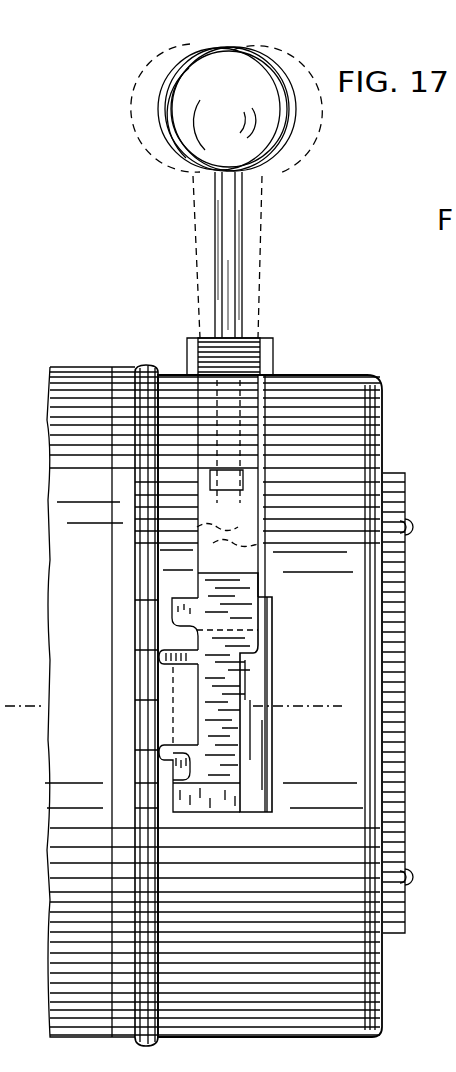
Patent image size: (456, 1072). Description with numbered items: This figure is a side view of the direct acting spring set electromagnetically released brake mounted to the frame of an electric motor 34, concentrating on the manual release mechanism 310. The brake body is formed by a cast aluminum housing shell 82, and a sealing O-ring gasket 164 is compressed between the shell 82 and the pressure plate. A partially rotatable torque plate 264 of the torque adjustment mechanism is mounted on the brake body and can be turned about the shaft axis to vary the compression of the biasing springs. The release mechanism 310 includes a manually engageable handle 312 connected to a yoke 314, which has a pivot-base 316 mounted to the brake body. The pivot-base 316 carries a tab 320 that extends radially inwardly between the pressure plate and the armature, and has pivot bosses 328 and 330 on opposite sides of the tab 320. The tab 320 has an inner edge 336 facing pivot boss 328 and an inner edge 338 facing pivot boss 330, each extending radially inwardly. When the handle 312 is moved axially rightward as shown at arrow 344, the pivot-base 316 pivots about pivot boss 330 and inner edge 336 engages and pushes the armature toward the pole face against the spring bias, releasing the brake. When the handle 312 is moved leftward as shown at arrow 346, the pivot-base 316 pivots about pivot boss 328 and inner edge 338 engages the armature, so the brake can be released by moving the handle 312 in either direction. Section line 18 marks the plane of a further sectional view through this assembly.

The section line 18- 18 is at (323, 704).
The electric motor 34 is at (88, 368).
The housing shell 82 is at (343, 375).
The sealing O-ring gasket 164 is at (152, 370).
The torque plate 264 is at (398, 473).
The release mechanism 310 is at (283, 333).
The handle 312 is at (243, 258).
The yoke 314 is at (252, 452).
The pivot-base 316 is at (225, 697).
The tab 320 is at (167, 710).
The pivot boss 328 is at (173, 640).
The pivot boss 330 is at (180, 778).
The inner edge 336 is at (161, 658).
The inner edge 338 is at (167, 747).
The arrow 344 is at (243, 12).
The arrow 346 is at (200, 12).